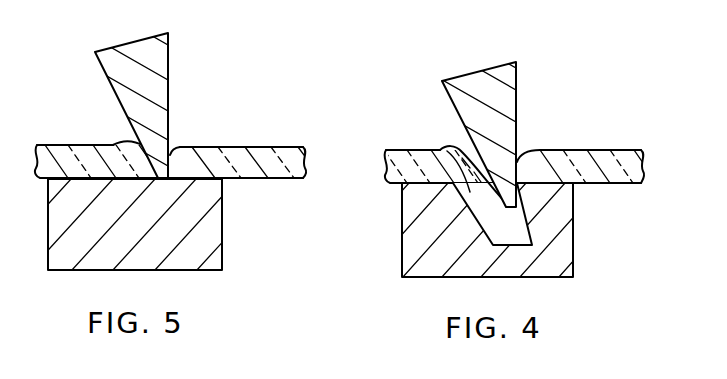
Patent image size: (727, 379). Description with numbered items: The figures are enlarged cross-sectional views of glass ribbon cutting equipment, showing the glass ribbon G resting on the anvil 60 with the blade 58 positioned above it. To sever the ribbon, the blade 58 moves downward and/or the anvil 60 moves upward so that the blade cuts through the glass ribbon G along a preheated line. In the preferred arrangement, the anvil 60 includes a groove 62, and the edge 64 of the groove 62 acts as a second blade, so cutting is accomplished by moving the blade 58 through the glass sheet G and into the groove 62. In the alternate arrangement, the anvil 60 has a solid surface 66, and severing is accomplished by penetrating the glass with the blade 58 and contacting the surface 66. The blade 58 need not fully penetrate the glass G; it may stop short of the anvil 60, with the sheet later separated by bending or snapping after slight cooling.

In FIG. 5, the glass ribbon G is at (222, 146).
In FIG. 4, the glass ribbon G is at (628, 151).
In FIG. 5, the blade 58 is at (168, 83).
In FIG. 4, the blade 58 is at (517, 72).
In FIG. 5, the anvil 60 is at (222, 256).
In FIG. 4, the anvil 60 is at (573, 264).
In FIG. 4, the groove 62 is at (441, 149).
In FIG. 4, the edge of the groove 64 is at (527, 155).
In FIG. 5, the solid surface 66 is at (73, 178).